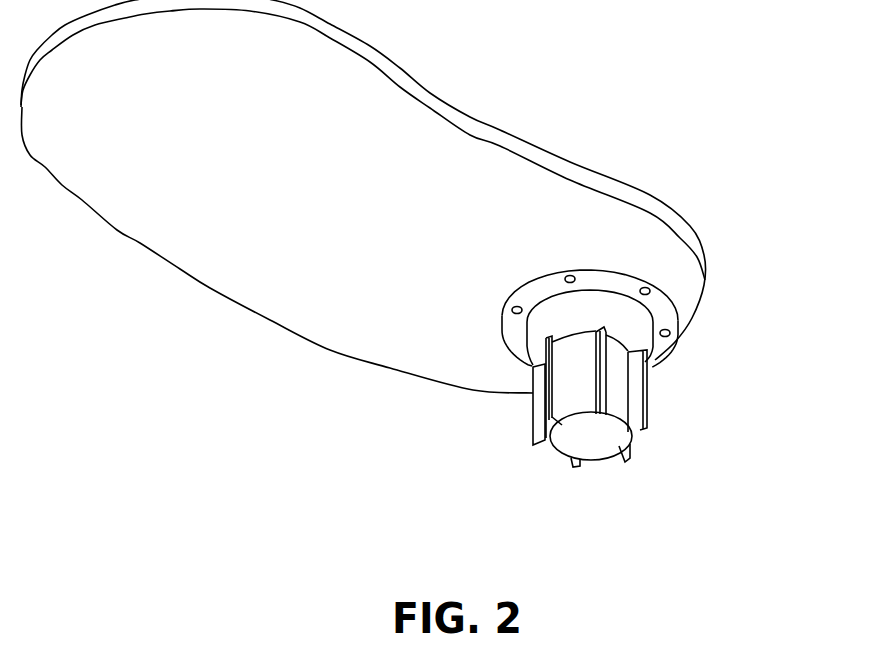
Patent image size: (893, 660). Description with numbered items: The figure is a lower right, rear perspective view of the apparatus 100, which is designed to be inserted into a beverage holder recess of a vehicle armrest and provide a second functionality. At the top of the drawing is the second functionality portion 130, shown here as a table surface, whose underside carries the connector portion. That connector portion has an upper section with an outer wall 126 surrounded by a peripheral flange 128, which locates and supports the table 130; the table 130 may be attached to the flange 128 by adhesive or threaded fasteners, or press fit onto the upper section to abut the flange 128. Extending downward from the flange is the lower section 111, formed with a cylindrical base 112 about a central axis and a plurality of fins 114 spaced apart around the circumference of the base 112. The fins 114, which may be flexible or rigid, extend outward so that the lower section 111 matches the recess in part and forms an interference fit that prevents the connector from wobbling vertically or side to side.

The apparatus 100 is at (622, 130).
The second functionality portion 130 is at (365, 114).
The peripheral flange 128 is at (661, 306).
The outer wall 126 is at (605, 308).
The cylindrical base 112 is at (590, 407).
The fins 114 is at (640, 405).
The lower section 111 is at (590, 439).